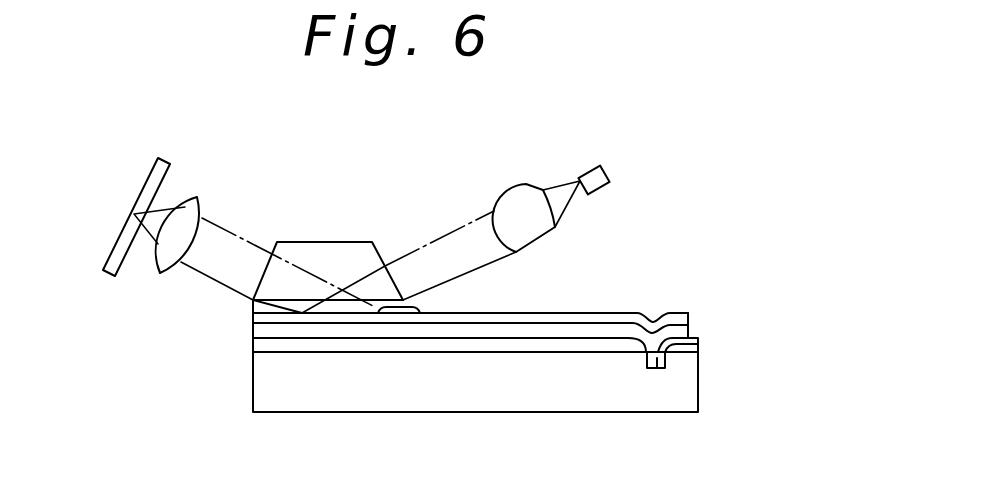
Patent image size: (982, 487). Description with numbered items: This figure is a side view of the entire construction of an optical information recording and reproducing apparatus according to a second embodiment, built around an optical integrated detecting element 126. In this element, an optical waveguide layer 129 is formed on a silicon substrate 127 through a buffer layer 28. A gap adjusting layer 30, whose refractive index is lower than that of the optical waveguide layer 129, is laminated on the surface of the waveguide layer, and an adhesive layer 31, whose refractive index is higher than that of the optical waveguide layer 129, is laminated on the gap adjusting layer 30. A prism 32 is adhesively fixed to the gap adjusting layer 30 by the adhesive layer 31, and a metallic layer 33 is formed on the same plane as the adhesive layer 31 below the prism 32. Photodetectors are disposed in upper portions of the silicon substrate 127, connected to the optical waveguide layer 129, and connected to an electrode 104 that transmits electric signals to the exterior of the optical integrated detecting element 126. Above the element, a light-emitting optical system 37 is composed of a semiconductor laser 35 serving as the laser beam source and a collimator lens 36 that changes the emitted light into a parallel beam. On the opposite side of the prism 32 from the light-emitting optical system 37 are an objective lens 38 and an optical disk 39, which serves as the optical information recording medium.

The buffer layer 28 is at (262, 347).
The gap adjusting layer 30 is at (593, 312).
The adhesive layer 31 is at (253, 305).
The prism 32 is at (327, 257).
The metallic layer 33 is at (422, 309).
The semiconductor laser 35 is at (602, 170).
The collimator lens 36 is at (505, 205).
The light-emitting optical system 37 is at (549, 182).
The objective lens 38 is at (192, 208).
The optical disk 39 is at (146, 183).
The electrode 104 is at (692, 338).
The optical integrated detecting element 126 is at (686, 272).
The silicon substrate 127 is at (498, 390).
The optical waveguide layer 129 is at (388, 332).